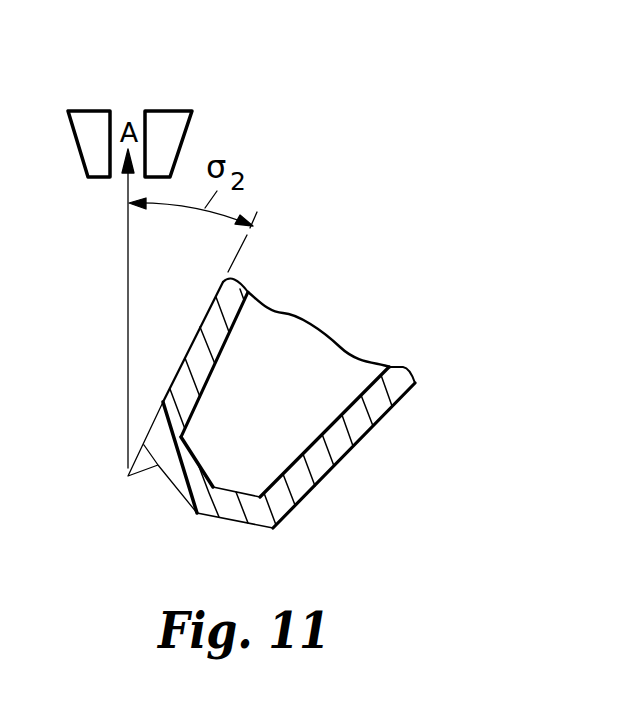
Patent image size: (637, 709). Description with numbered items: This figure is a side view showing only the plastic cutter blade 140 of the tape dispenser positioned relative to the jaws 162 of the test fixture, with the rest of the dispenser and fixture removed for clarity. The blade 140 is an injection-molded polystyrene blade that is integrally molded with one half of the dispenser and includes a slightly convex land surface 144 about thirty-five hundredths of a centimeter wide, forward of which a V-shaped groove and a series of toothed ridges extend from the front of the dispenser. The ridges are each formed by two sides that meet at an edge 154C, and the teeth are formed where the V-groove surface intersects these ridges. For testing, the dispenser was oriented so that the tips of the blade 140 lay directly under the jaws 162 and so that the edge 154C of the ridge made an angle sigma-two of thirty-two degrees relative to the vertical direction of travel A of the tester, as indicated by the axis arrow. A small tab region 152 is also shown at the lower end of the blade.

The polystyrene blade 140 is at (277, 429).
The land surface 144 is at (238, 522).
The flange tab 152 is at (128, 476).
The ridge edge 154C is at (163, 402).
The jaws 162 is at (141, 118).